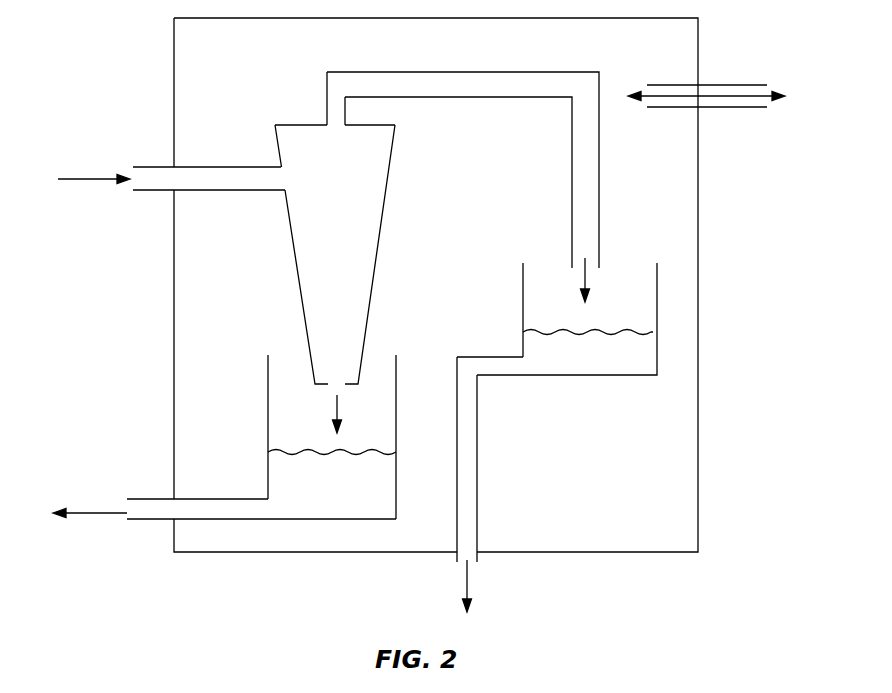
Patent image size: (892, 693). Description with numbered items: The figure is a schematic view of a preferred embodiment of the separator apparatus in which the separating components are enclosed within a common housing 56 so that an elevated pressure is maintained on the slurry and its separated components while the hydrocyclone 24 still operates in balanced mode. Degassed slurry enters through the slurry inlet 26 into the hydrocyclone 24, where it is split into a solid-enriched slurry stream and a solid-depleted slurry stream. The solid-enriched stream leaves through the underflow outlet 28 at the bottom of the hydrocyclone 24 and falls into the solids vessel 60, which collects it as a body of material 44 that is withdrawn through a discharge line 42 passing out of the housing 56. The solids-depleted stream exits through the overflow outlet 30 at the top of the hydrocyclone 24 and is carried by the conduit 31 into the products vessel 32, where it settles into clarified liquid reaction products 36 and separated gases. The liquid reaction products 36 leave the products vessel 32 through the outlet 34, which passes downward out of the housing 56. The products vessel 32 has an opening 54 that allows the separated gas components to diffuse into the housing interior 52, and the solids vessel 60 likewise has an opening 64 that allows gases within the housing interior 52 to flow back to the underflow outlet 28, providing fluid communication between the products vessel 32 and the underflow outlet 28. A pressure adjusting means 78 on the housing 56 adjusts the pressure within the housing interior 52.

The hydrocyclone 24 is at (351, 197).
The slurry inlet 26 is at (272, 158).
The underflow outlet 28 is at (339, 370).
The overflow outlet 30 is at (347, 122).
The conduit 31 is at (490, 88).
The products vessel 32 is at (657, 307).
The outlet 34 is at (478, 557).
The liquid reaction products 36 is at (608, 366).
The outlet conduit 42 is at (158, 510).
The liquid 44 is at (349, 497).
The housing interior 52 is at (481, 189).
The opening 54 is at (548, 262).
The housing 56 is at (698, 218).
The solids vessel 60 is at (268, 432).
The opening 64 is at (292, 362).
The pressure adjusting means 78 is at (826, 109).